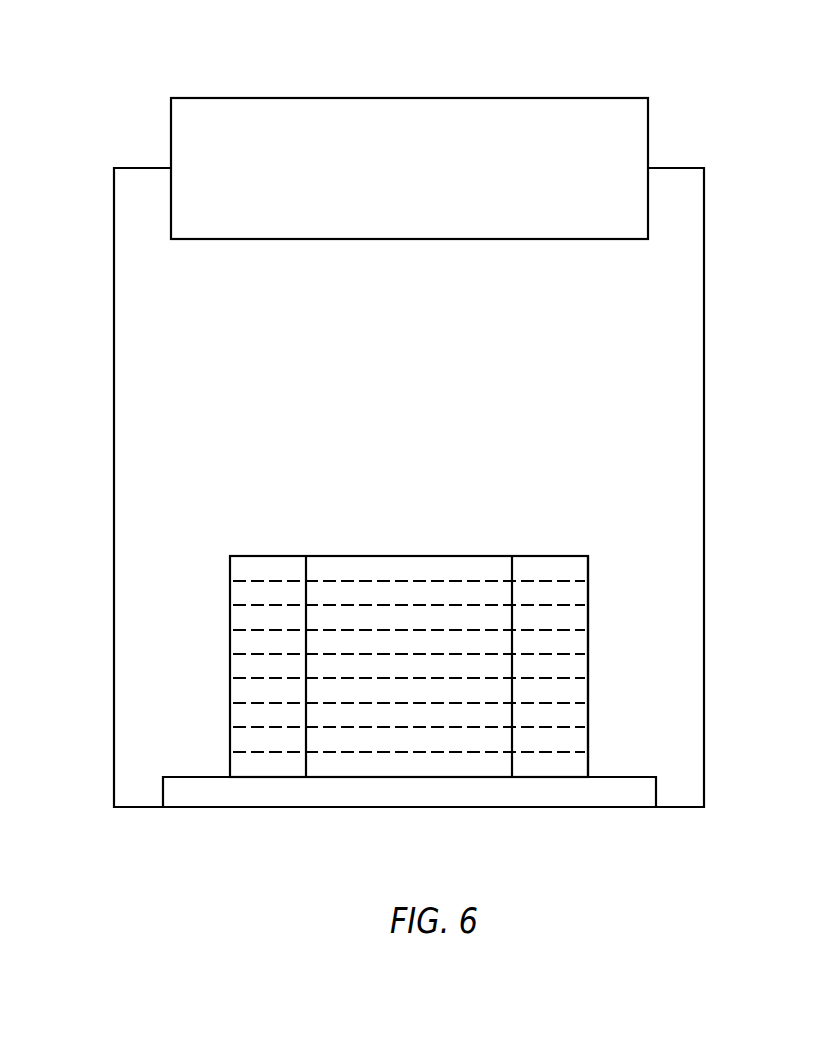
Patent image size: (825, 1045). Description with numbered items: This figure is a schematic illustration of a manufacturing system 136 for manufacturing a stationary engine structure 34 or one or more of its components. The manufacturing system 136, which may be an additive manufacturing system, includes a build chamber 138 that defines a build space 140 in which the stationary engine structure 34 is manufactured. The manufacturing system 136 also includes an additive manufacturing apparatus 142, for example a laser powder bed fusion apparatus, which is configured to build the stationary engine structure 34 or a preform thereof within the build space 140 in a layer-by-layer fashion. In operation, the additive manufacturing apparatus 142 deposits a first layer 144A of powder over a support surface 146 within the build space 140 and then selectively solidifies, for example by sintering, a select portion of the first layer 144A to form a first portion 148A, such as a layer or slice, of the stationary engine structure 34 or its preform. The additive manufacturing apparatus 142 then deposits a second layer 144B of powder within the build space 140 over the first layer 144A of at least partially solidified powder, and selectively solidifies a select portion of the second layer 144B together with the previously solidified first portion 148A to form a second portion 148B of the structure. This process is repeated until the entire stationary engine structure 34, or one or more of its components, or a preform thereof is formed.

The manufacturing system 136 is at (704, 125).
The build chamber 138 is at (705, 310).
The build space 140 is at (428, 389).
The additive manufacturing apparatus 142 is at (590, 97).
The first layer of powder 144A is at (590, 765).
The second layer of powder 144B is at (590, 740).
The support surface 146 is at (186, 777).
The first portion 148A is at (513, 762).
The second portion 148B is at (513, 734).
The stationary engine structure 34 is at (450, 553).